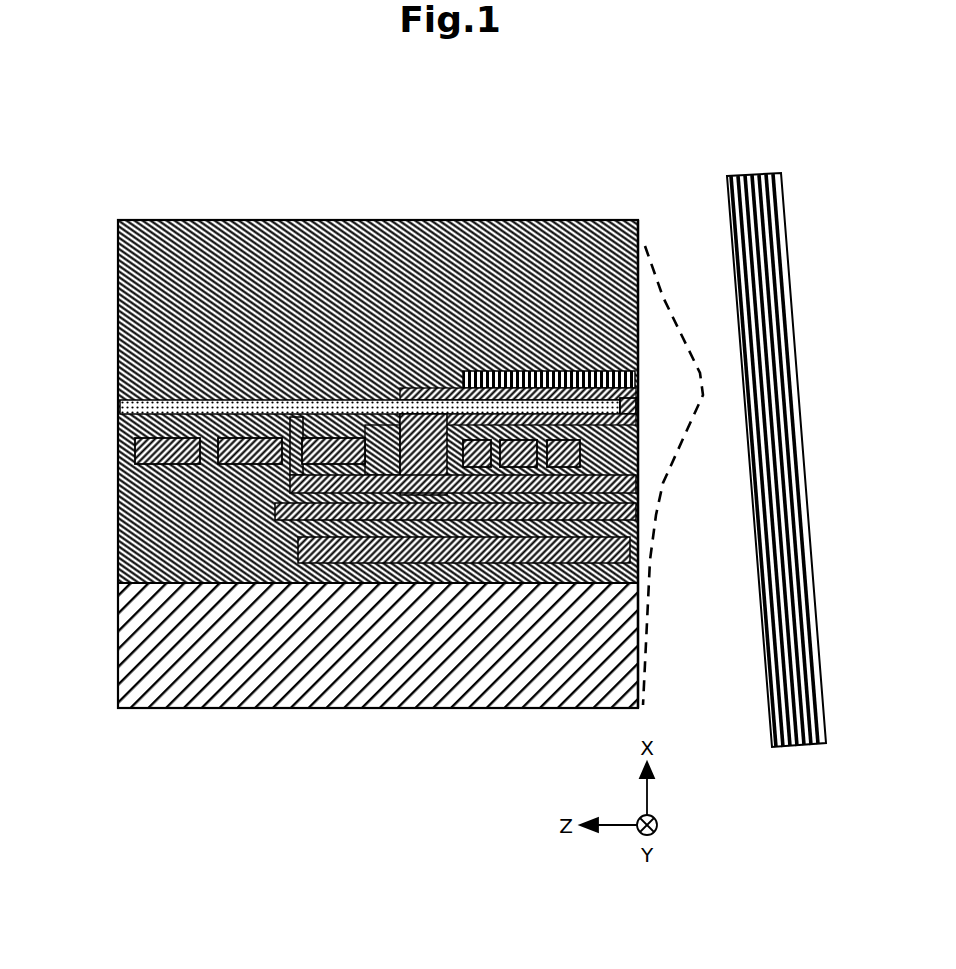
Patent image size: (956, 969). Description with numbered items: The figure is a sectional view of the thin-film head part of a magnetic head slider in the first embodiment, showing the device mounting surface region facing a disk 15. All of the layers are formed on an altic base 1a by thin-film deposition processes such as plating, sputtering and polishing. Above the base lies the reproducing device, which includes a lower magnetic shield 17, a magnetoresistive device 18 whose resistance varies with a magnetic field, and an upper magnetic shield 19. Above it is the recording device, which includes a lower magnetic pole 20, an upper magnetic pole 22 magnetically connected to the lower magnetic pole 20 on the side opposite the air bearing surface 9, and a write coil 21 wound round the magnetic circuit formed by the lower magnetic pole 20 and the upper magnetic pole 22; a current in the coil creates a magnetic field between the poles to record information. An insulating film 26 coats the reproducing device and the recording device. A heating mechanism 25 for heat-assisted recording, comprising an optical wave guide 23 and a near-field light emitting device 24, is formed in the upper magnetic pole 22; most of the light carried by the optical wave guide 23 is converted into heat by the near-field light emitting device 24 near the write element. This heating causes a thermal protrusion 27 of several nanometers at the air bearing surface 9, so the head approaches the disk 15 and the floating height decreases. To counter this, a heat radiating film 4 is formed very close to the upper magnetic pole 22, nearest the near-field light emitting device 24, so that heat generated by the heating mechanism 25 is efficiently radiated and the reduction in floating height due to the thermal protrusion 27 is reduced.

The altic base 1a is at (140, 645).
The heat radiating film 4 is at (490, 371).
The air bearing surface 9 is at (645, 244).
The disk 15 is at (775, 200).
The lower magnetic shield 17 is at (302, 455).
The magnetoresistive device 18 is at (572, 371).
The upper magnetic shield 19 is at (378, 480).
The lower magnetic pole 20 is at (290, 481).
The write coil 21 is at (135, 444).
The upper magnetic pole 22 is at (403, 398).
The optical wave guide 23 is at (122, 407).
The near-field light emitting device 24 is at (623, 368).
The heating mechanism for heat-assisted recording 25 is at (636, 403).
The insulating film 26 is at (186, 248).
The thermal protrusion 27 is at (667, 297).